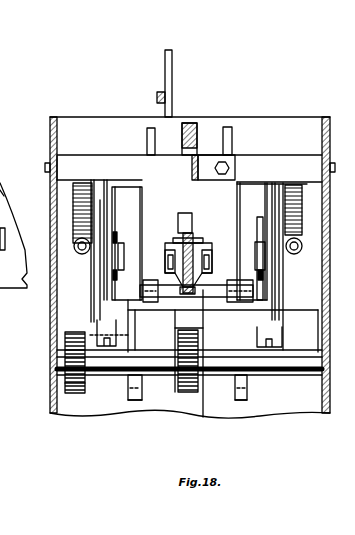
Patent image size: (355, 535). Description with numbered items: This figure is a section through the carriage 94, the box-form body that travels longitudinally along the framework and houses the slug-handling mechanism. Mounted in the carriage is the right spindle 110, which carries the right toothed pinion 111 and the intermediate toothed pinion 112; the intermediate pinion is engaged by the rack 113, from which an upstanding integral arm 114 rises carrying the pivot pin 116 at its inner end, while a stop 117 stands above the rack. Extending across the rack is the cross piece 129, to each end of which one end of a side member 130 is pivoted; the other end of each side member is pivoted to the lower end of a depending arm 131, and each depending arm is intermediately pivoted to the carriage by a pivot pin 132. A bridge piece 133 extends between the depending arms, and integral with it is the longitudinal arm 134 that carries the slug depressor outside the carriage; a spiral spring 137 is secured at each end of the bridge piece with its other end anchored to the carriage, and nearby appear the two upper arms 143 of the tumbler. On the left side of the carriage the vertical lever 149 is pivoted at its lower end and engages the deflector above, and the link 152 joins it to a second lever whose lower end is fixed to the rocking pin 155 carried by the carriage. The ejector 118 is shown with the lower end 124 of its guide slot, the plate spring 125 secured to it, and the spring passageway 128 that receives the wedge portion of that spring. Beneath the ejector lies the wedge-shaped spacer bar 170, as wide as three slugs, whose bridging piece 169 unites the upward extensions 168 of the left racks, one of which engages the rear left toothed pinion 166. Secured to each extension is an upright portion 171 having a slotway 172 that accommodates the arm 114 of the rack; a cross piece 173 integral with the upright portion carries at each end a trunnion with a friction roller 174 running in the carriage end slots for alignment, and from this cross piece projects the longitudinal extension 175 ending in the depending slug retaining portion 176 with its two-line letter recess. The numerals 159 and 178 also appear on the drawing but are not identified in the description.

The carriage 94 is at (50, 338).
The right spindle 110 is at (100, 371).
The right toothed pinion 111 is at (67, 383).
The intermediate toothed pinion 112 is at (195, 300).
The rack 113 is at (178, 330).
The upstanding integral arm 114 is at (90, 236).
The pivot pin 116 is at (207, 256).
The stop 117 is at (204, 412).
The ejector 118 is at (108, 290).
The lower end of guide slot 124 is at (104, 261).
The plate spring 125 is at (100, 227).
The spring passageway 128 is at (195, 233).
The cross piece 129 is at (180, 376).
The side member 130 is at (100, 336).
The depending arm 131 is at (106, 300).
The pivot pin 132 is at (303, 236).
The bridge piece 133 is at (252, 183).
The longitudinal arm 134 is at (189, 123).
The spiral spring 137 is at (72, 202).
The upper arms 143 is at (152, 138).
The vertical lever 149 is at (165, 69).
The link 152 is at (157, 98).
The rocking pin 155 is at (123, 372).
The pin 159 is at (258, 286).
The rear left toothed pinion 166 is at (248, 383).
The upward extension 168 is at (67, 375).
The bridging piece 169 is at (130, 386).
The spacer bar 170 is at (268, 300).
The upright portion 171 is at (185, 214).
The slotway 172 is at (178, 222).
The cross piece 173 is at (180, 168).
The friction roller 174 is at (46, 165).
The longitudinal extension 175 is at (196, 158).
The depending slug retaining portion 176 is at (14, 229).
The lever 178 is at (0, 169).